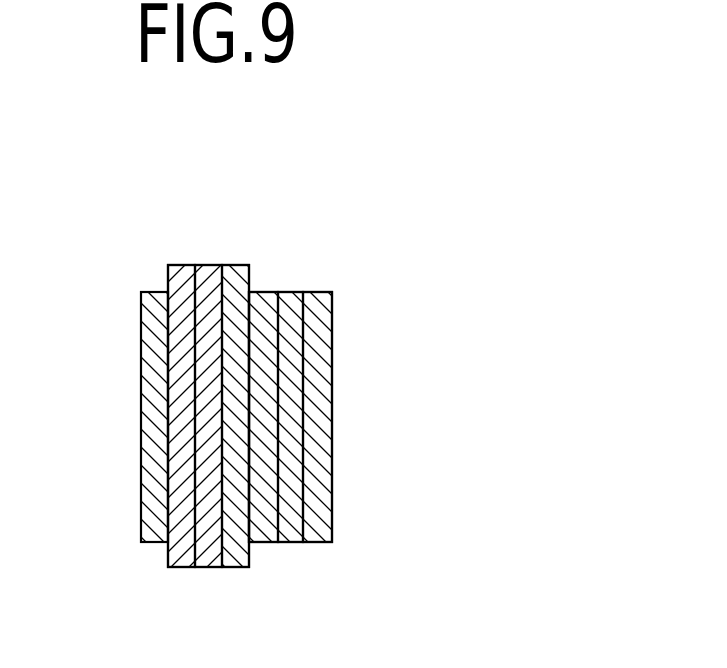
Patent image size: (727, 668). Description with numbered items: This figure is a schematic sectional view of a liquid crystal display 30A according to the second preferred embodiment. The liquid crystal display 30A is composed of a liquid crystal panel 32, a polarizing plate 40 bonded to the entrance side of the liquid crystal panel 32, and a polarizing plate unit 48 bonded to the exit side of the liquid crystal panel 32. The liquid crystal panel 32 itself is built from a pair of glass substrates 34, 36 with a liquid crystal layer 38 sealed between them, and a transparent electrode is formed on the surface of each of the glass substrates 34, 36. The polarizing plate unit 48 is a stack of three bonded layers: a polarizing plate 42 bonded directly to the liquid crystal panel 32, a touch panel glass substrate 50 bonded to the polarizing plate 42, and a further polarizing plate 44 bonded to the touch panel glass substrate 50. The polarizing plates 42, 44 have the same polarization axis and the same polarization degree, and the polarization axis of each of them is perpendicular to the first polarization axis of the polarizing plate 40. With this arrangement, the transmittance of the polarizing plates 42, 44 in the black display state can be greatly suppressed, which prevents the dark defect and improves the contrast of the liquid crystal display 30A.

The liquid crystal display 30A is at (250, 227).
The liquid crystal panel 32 is at (212, 266).
The glass substrate 34 is at (173, 568).
The glass substrate 36 is at (238, 568).
The liquid crystal layer 38 is at (205, 568).
The polarizing plate 40 is at (140, 541).
The polarizing plate 42 is at (260, 543).
The polarizing plate 44 is at (332, 542).
The polarizing plate unit 48 is at (334, 339).
The touch panel glass substrate 50 is at (288, 543).